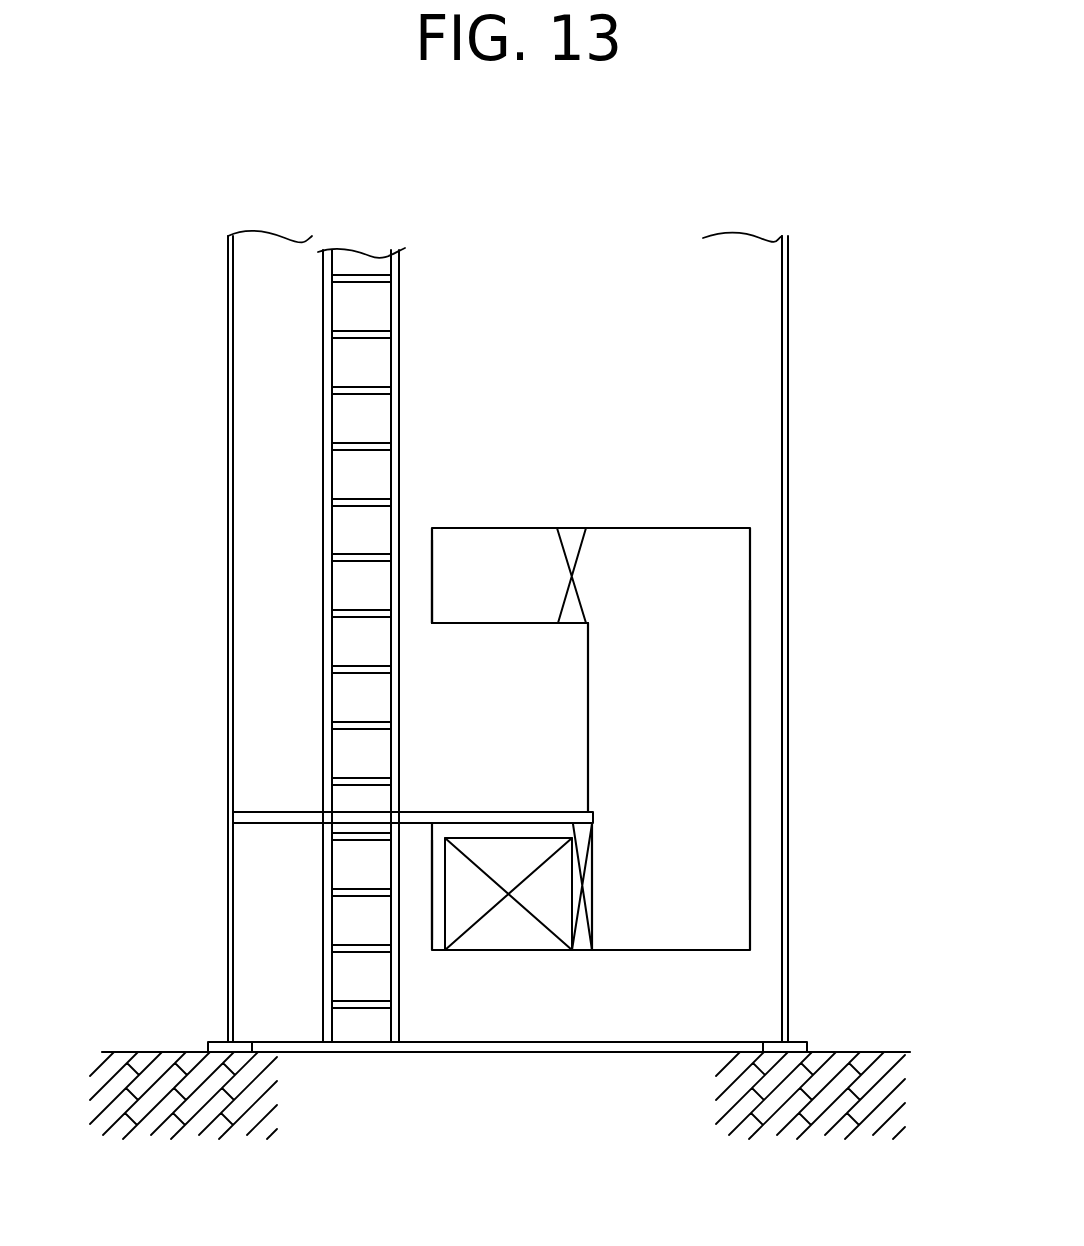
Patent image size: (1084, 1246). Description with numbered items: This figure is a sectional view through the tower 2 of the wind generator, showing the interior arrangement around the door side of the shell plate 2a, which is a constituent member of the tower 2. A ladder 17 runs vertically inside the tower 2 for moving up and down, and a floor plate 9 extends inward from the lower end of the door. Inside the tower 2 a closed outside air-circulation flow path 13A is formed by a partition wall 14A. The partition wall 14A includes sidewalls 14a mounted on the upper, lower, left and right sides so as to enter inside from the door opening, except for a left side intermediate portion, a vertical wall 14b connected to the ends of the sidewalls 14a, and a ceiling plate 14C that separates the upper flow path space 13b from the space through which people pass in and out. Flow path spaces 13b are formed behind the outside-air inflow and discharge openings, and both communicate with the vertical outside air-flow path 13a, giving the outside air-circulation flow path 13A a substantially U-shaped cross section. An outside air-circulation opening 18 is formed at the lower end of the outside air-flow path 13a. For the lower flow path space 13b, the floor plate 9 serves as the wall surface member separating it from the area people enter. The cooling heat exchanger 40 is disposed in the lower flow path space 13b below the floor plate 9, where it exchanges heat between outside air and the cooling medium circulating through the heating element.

The tower 2 is at (800, 283).
The shell plate 2a is at (790, 352).
The ladder 17 is at (400, 312).
The floor plate 9 is at (300, 810).
The partition wall 14A is at (645, 506).
The outside air-circulation flow path 13A is at (548, 522).
The sidewalls 14a is at (493, 528).
The outside air-flow path 13a is at (718, 742).
The vertical wall 14b is at (700, 930).
The ceiling plate 14C is at (460, 625).
The flow path spaces 13b is at (457, 556).
The outside air-circulation opening 18 is at (573, 577).
The cooling heat exchanger 40 is at (480, 950).